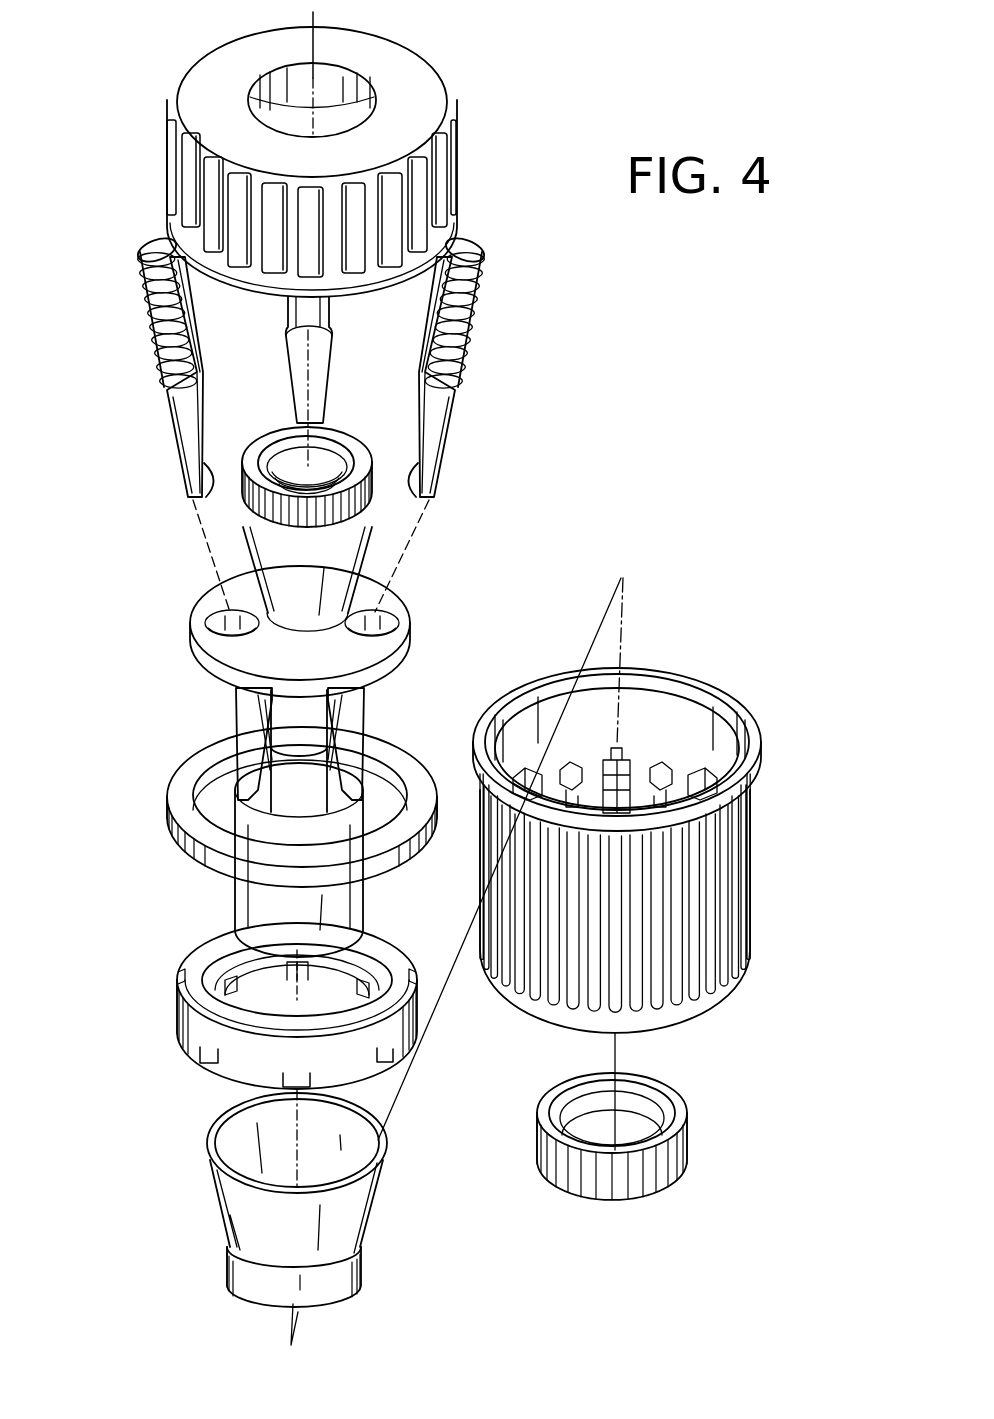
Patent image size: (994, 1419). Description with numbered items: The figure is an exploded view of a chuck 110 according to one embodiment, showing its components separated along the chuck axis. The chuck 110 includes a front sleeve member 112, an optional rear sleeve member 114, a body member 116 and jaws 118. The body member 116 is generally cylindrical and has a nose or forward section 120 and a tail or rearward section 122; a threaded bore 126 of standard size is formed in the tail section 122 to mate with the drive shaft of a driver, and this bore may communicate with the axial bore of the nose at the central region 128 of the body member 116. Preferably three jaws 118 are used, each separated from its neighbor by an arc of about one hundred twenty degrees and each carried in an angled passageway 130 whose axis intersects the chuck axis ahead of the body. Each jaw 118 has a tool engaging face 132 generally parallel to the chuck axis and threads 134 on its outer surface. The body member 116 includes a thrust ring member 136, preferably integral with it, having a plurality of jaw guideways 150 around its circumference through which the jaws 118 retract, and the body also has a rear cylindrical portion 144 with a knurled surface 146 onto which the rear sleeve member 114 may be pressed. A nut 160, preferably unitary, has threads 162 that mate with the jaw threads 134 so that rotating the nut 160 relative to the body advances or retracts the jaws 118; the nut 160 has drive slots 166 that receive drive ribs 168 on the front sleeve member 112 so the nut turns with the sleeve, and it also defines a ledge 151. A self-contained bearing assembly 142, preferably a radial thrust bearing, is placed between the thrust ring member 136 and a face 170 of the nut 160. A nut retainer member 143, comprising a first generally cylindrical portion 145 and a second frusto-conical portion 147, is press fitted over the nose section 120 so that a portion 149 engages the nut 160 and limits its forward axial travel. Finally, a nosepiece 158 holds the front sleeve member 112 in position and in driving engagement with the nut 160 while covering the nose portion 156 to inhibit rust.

The chuck 110 is at (640, 441).
The front sleeve member 112 is at (672, 1003).
The rear sleeve member 114 is at (430, 90).
The body member 116 is at (252, 822).
The jaws 118 is at (325, 307).
The nose or forward section 120 is at (240, 905).
The tail or rearward section 122 is at (390, 546).
The threaded bore 126 is at (333, 470).
The central region 128 is at (400, 658).
The passageways 130 is at (245, 742).
The tool engaging face 132 is at (200, 485).
The threads 134 is at (148, 290).
The thrust ring member 136 is at (215, 655).
The self-contained bearing assembly 142 is at (400, 855).
The nut retainer member 143 is at (380, 1218).
The rear cylindrical portion 144 is at (377, 470).
The first generally cylindrical portion 145 is at (228, 1282).
The knurled surface 146 is at (245, 452).
The second frusto-conical portion 147 is at (226, 1205).
The portion 149 is at (213, 1127).
The jaw guideways 150 is at (225, 613).
The ledge 151 is at (232, 987).
The nose portion 156 is at (350, 905).
The nosepiece 158 is at (680, 1160).
The nut 160 is at (185, 1040).
The threads 162 is at (355, 985).
The drive slots 166 is at (393, 1068).
The drive ribs 168 is at (680, 780).
The face 170 is at (193, 997).